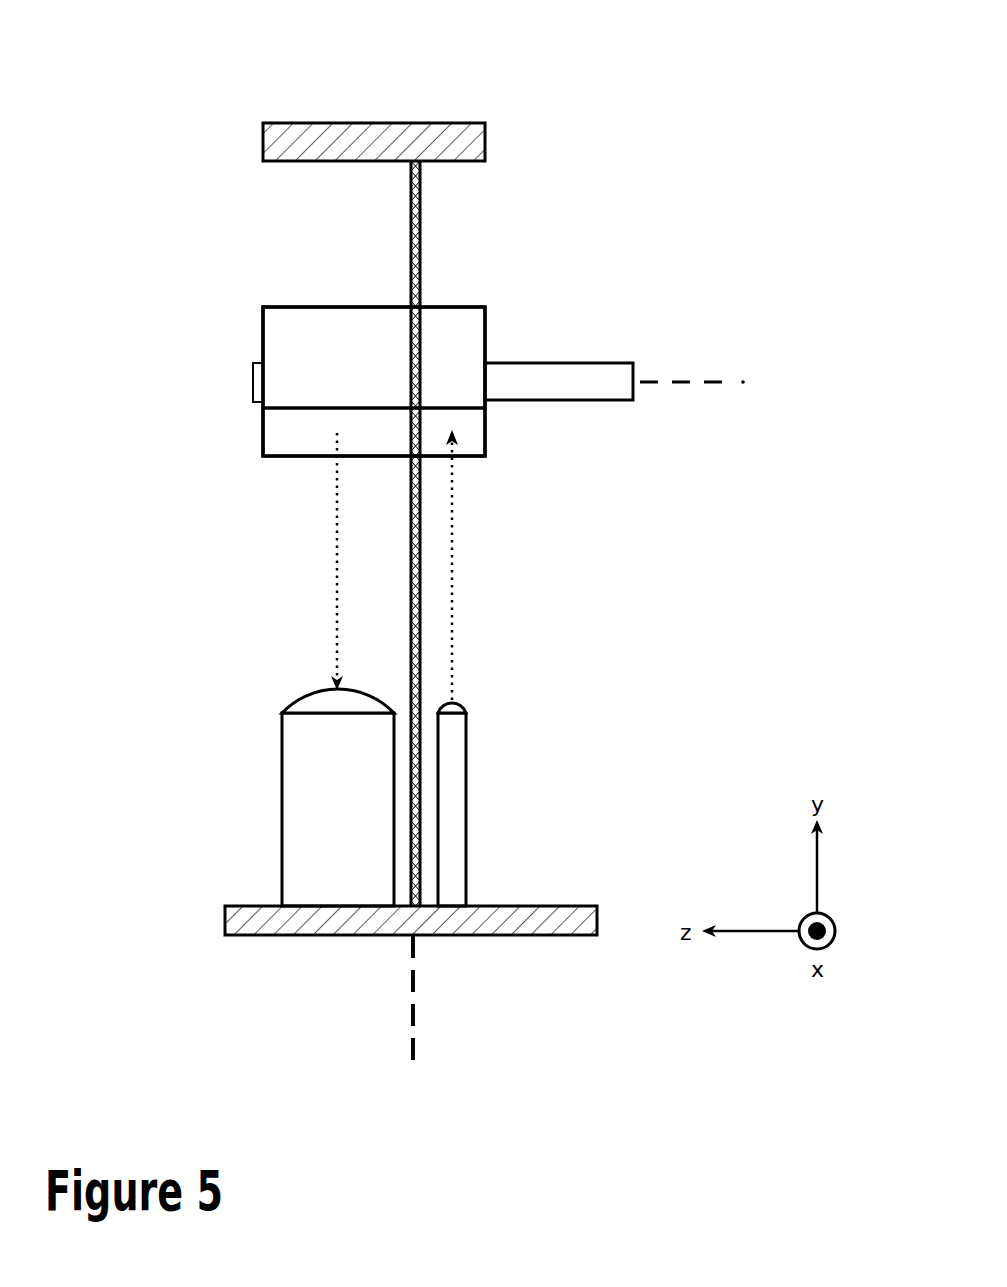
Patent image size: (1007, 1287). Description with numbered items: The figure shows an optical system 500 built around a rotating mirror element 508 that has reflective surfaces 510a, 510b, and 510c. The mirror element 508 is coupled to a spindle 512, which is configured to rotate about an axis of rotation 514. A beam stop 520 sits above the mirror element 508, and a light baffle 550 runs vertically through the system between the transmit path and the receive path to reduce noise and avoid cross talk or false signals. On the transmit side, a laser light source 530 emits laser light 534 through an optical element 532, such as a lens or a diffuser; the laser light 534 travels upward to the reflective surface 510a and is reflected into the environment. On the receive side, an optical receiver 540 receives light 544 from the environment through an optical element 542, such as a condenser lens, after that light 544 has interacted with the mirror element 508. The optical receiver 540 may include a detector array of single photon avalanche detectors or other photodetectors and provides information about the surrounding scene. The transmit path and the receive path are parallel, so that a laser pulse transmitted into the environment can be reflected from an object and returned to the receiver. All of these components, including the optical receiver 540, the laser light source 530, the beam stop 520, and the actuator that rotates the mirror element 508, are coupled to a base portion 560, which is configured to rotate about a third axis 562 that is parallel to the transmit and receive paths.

The optical system 500 is at (722, 86).
The beam stop 520 is at (468, 160).
The light baffle 550 is at (422, 235).
The reflective surface 510c is at (288, 294).
The reflective surface 510b is at (310, 307).
The reflective surface 510a is at (300, 457).
The mirror element 508 is at (483, 457).
The spindle 512 is at (597, 401).
The axis of rotation 514 is at (717, 383).
The received light 544 is at (335, 630).
The laser light 534 is at (452, 547).
The optical receiver 540 is at (282, 823).
The optical element 542 is at (295, 695).
The laser light source 530 is at (466, 842).
The optical element 532 is at (460, 705).
The base portion 560 is at (318, 936).
The third axis 562 is at (412, 1035).